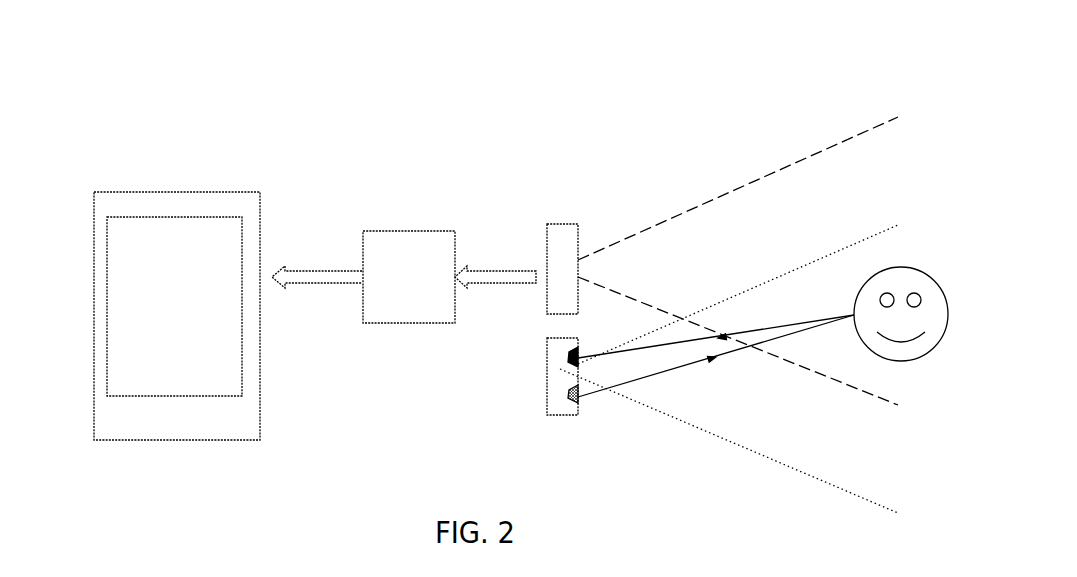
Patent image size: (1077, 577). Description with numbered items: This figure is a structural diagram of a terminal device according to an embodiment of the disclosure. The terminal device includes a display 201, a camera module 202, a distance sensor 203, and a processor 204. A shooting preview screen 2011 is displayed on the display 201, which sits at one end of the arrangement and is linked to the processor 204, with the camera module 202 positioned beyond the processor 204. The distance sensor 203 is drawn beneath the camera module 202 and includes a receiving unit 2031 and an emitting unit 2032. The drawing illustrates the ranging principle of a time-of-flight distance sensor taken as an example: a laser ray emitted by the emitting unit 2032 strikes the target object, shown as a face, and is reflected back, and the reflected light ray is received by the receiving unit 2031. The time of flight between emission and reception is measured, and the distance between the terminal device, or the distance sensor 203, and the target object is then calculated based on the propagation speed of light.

The display 201 is at (93, 230).
The shooting preview screen 2011 is at (107, 303).
The camera module 202 is at (547, 241).
The distance sensor 203 is at (547, 404).
The receiving unit 2031 is at (578, 348).
The emitting unit 2032 is at (578, 398).
The processor 204 is at (363, 231).